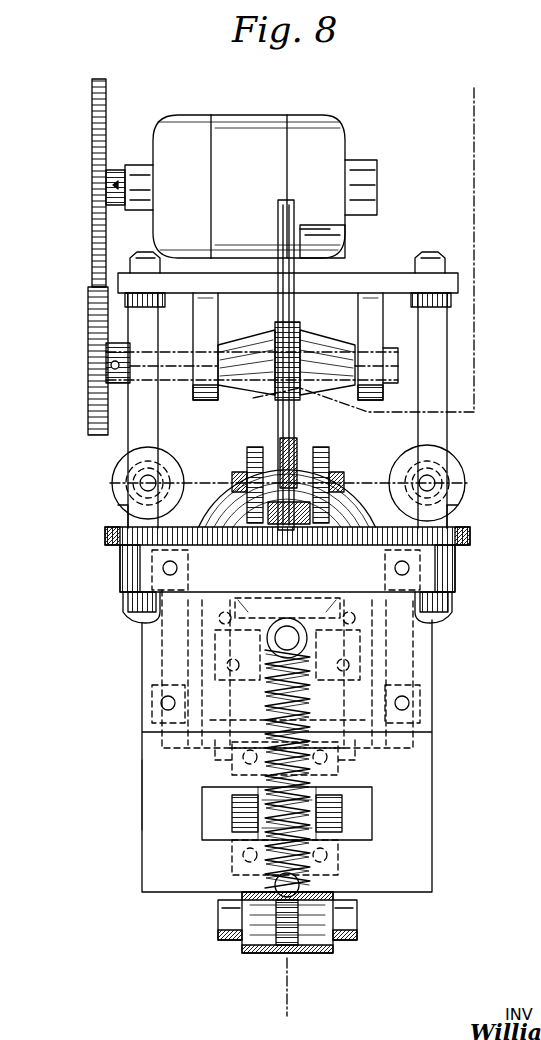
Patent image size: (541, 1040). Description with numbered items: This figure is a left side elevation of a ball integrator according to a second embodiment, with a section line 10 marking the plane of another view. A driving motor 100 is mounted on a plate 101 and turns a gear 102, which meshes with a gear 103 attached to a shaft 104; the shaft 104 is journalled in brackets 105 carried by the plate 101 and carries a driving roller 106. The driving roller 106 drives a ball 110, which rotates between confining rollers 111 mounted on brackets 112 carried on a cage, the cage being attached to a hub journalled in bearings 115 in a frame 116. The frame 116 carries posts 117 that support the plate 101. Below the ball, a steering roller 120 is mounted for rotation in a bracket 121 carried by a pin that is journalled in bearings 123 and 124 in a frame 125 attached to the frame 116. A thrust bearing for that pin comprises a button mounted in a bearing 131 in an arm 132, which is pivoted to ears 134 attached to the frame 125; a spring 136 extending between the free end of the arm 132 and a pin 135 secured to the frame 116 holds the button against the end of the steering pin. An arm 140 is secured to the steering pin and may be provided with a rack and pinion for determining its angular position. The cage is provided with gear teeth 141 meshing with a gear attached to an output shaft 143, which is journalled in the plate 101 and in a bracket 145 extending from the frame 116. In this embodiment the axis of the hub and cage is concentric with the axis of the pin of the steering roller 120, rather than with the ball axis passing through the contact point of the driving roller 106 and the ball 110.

The section line 10 is at (495, 84).
The driving motor 100 is at (262, 106).
The plate 101 is at (373, 280).
The gear 102 is at (92, 138).
The gear 103 is at (100, 328).
The shaft 104 is at (392, 365).
The brackets 105 is at (204, 330).
The driving roller 106 is at (305, 352).
The ball 110 is at (223, 435).
The confining rollers 111 is at (295, 445).
The brackets 112 is at (247, 443).
The bearings 115 is at (412, 568).
The frame 116 is at (145, 655).
The posts 117 is at (135, 437).
The steering roller 120 is at (235, 608).
The bracket 121 is at (330, 690).
The bearing 123 is at (400, 752).
The bearing 124 is at (350, 876).
The frame 125 is at (152, 792).
The bearing 131 is at (318, 952).
The arm 132 is at (282, 952).
The ears 134 is at (222, 928).
The pin 135 is at (305, 635).
The spring 136 is at (240, 855).
The arm 140 is at (340, 815).
The gear teeth 141 is at (122, 550).
The output shaft 143 is at (340, 229).
The bracket 145 is at (252, 562).